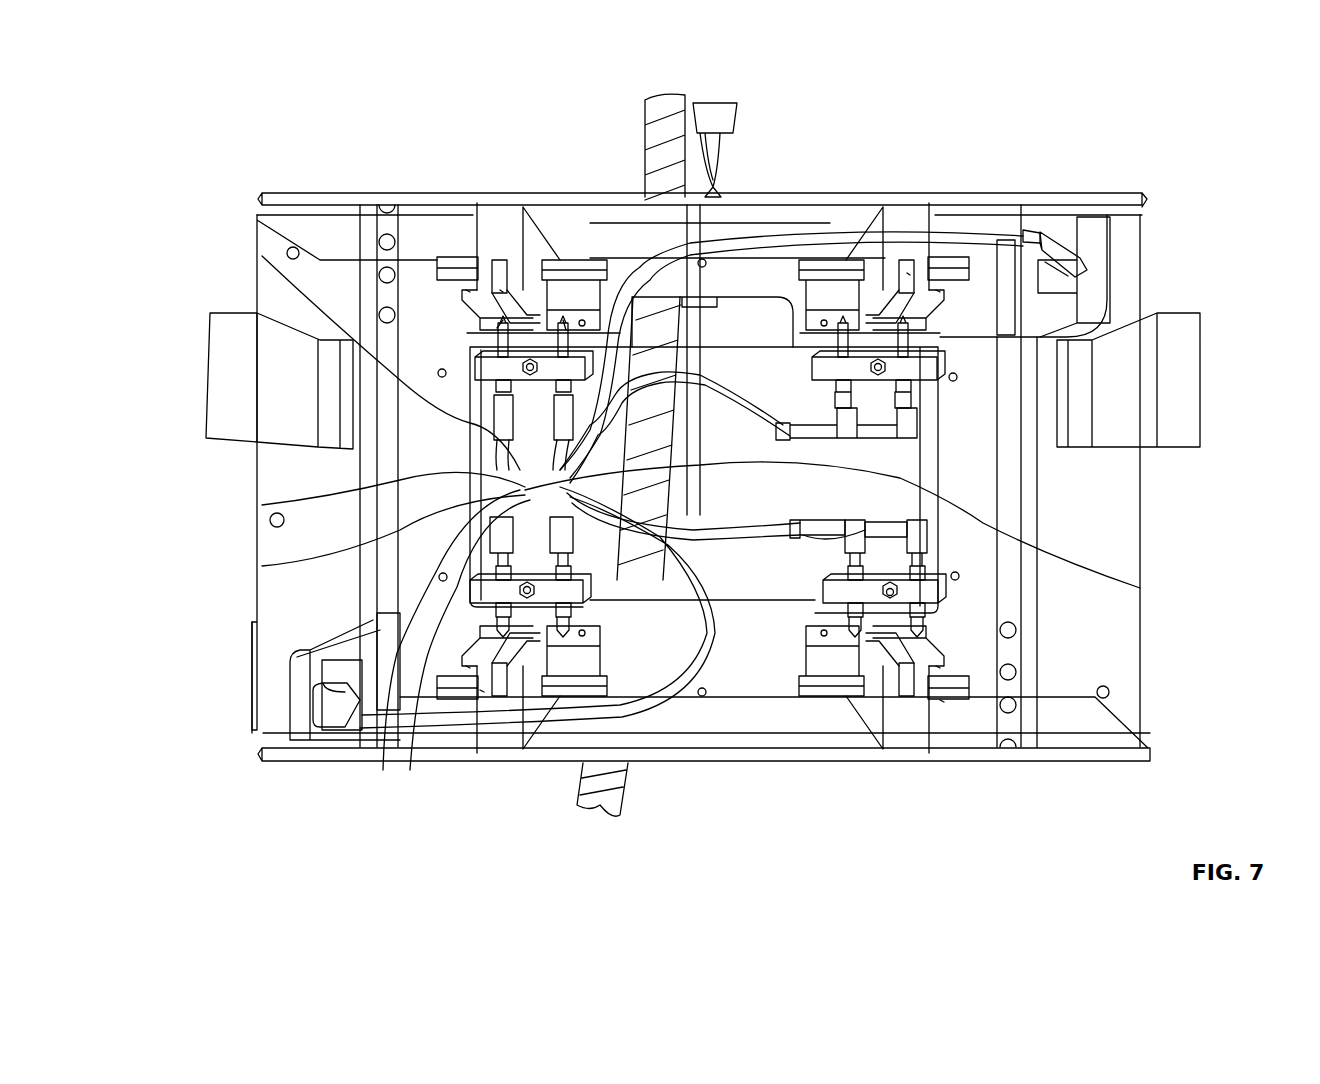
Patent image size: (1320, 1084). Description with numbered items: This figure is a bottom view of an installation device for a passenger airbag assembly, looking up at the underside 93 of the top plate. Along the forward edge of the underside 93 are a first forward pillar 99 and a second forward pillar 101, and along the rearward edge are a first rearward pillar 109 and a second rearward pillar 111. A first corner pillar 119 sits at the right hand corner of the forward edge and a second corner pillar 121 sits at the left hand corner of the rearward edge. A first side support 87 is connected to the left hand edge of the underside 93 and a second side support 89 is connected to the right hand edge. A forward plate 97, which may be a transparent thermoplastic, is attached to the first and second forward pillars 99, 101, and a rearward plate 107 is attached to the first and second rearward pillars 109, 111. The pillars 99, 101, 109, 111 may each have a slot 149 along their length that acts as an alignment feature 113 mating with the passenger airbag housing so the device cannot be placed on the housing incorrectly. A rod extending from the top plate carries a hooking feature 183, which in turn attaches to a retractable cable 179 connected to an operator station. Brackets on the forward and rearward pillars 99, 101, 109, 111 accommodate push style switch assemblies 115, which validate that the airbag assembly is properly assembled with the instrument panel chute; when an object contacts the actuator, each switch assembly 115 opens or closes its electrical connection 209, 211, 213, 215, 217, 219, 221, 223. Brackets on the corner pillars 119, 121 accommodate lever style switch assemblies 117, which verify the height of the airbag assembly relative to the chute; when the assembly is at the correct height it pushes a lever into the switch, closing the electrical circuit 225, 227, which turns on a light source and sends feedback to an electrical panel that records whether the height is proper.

The first side support 87 is at (230, 328).
The second side support 89 is at (1190, 383).
The underside of the top plate 93 is at (1130, 628).
The forward plate 97 is at (318, 193).
The first forward pillar 99 is at (500, 220).
The second forward pillar 101 is at (915, 220).
The rearward plate 107 is at (640, 757).
The first rearward pillar 109 is at (498, 722).
The second rearward pillar 111 is at (915, 720).
The alignment feature 113 is at (468, 290).
The switch assembly 115 is at (500, 343).
The switch assembly 117 is at (1075, 270).
The first corner pillar 119 is at (1097, 227).
The second corner pillar 121 is at (297, 697).
The slot 149 is at (500, 290).
The retractable cable 179 is at (650, 105).
The hooking feature 183 is at (723, 153).
The electrical connection 209 is at (262, 505).
The electrical connection 211 is at (262, 253).
The electrical connection 213 is at (727, 387).
The electrical connection 215 is at (1140, 586).
The electrical connection 217 is at (262, 568).
The electrical connection 219 is at (383, 770).
The electrical connection 221 is at (763, 545).
The electrical connection 223 is at (803, 535).
The electrical circuit 225 is at (525, 725).
The electrical circuit 227 is at (993, 232).